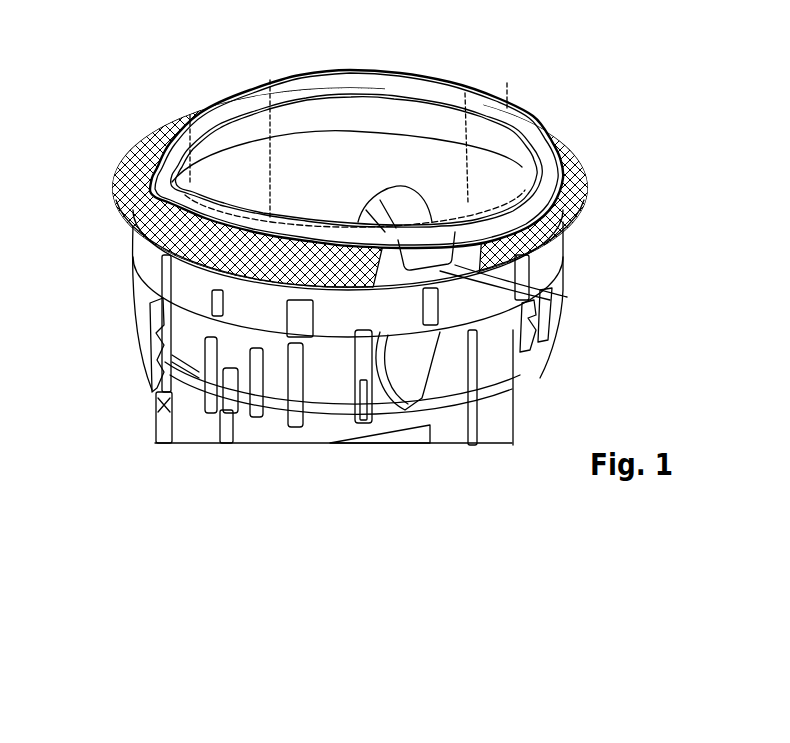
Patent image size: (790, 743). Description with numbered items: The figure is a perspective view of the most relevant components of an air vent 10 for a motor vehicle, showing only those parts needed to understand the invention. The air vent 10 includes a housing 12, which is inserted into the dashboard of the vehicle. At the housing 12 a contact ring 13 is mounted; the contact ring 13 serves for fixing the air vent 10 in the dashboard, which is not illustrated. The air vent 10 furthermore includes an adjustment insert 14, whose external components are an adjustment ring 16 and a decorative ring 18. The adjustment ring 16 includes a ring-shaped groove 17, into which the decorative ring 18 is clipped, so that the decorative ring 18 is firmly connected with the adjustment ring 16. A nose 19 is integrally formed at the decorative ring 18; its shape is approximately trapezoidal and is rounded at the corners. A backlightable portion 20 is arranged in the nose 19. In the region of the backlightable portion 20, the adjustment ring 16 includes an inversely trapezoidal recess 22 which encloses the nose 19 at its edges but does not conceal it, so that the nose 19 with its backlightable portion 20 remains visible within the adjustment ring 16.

The air vent 10 is at (170, 77).
The housing 12 is at (410, 381).
The contact ring 13 is at (497, 357).
The adjustment insert 14 is at (312, 165).
The adjustment ring 16 is at (578, 170).
The ring-shaped groove 17 is at (120, 163).
The decorative ring 18 is at (532, 118).
The nose 19 is at (455, 235).
The backlightable portion 20 is at (428, 240).
The inversely trapezoidal recess 22 is at (548, 300).